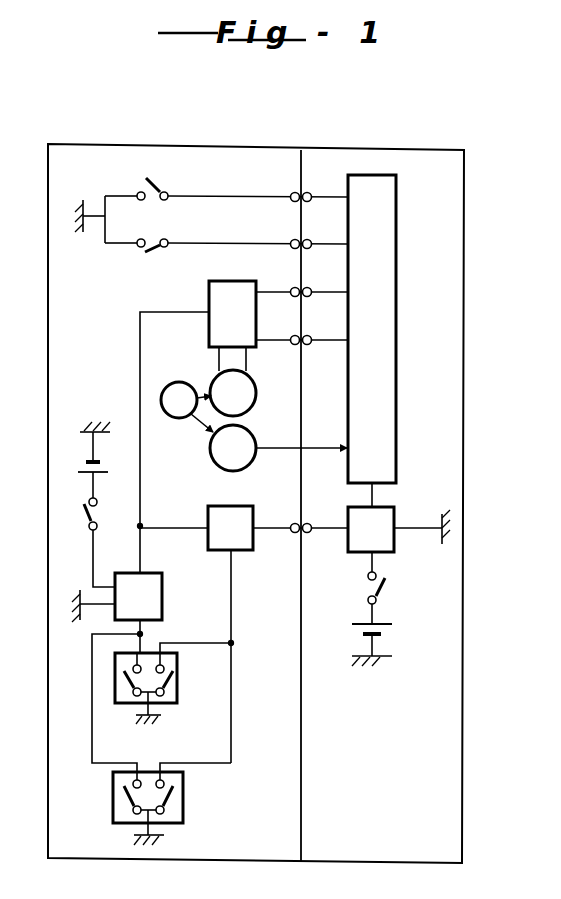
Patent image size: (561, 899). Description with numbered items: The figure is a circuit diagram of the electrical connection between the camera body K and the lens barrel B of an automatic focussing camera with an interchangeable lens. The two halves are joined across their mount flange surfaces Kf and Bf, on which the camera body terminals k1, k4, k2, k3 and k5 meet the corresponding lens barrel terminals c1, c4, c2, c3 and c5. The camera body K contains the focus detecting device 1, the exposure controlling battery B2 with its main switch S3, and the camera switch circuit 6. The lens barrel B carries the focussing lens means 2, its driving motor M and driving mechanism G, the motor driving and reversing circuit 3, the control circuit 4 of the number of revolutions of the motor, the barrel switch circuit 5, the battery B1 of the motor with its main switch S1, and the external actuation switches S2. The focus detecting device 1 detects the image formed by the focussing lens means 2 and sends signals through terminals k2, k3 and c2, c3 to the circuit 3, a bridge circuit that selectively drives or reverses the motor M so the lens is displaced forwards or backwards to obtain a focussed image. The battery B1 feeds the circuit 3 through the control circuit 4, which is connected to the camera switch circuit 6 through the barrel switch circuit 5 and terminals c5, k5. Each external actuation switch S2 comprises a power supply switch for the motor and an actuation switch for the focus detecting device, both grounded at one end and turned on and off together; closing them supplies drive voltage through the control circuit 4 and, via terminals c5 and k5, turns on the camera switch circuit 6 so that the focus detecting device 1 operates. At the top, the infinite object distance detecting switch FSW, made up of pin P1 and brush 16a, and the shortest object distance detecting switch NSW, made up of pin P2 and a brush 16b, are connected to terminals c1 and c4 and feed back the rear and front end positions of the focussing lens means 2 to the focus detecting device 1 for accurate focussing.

The lens barrel B is at (201, 152).
The camera body K is at (395, 157).
The mount flange surface of the camera body Kf is at (293, 822).
The mount flange surface of the lens barrel Bf is at (300, 838).
The projecting pin P1 is at (137, 193).
The projecting pin P2 is at (137, 246).
The infinite object distance detecting switch FSW is at (145, 173).
The shortest object distance detecting switch NSW is at (151, 263).
The brush 16a is at (168, 195).
The switch contact 16b is at (168, 242).
The terminal c1 is at (292, 195).
The terminal k1 is at (310, 195).
The terminal c2 is at (292, 290).
The terminal k2 is at (310, 290).
The terminal c3 is at (292, 338).
The terminal k3 is at (310, 338).
The terminal c4 is at (292, 242).
The terminal k4 is at (310, 242).
The terminal c5 is at (292, 525).
The terminal k5 is at (310, 525).
The focus detecting device 1 is at (397, 242).
The focussing lens means 2 is at (212, 456).
The motor driving and reversing circuit 3 is at (232, 284).
The control circuit 4 is at (163, 598).
The barrel switch circuit 5 is at (248, 551).
The camera switch circuit 6 is at (396, 514).
The driving motor M is at (233, 393).
The driving mechanism G is at (187, 407).
The battery B1 is at (86, 465).
The exposure controlling battery B2 is at (382, 632).
The main switch S1 is at (85, 541).
The external actuation switch S2 is at (163, 732).
The main switch S3 is at (388, 598).